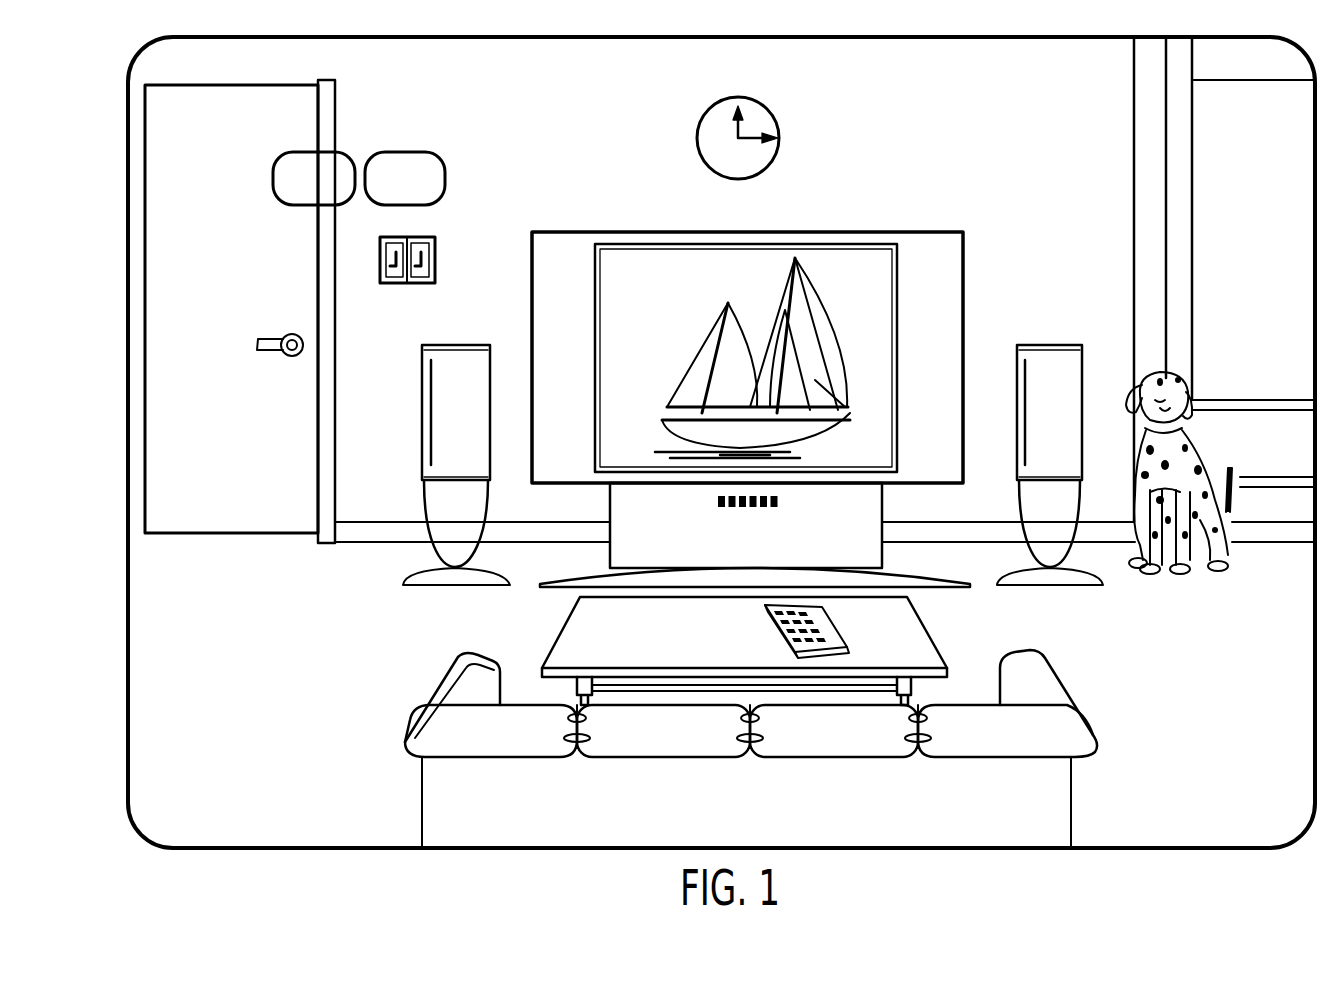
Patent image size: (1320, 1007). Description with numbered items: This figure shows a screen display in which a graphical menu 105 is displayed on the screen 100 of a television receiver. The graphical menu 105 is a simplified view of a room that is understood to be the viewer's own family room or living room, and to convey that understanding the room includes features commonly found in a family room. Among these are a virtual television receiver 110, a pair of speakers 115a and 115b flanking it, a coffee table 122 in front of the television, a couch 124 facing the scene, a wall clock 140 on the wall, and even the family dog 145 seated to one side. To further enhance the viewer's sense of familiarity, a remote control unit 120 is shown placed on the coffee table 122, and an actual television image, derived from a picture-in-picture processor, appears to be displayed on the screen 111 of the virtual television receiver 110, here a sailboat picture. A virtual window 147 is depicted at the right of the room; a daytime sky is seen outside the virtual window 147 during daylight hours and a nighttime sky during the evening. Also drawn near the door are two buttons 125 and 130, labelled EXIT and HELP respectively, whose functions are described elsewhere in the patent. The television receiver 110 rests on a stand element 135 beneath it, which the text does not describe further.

The screen 100 is at (127, 298).
The graphical menu 105 is at (886, 130).
The television receiver 110 is at (747, 333).
The screen 111 is at (637, 258).
The speaker 115a is at (478, 344).
The speaker 115b is at (1055, 344).
The remote control unit 120 is at (845, 645).
The coffee table 122 is at (768, 650).
The couch 124 is at (1067, 687).
The button 125 is at (338, 152).
The button 130 is at (405, 152).
The television stand / media unit 135 is at (852, 513).
The wall clock 140 is at (702, 113).
The family dog 145 is at (1188, 575).
The virtual window 147 is at (1195, 172).